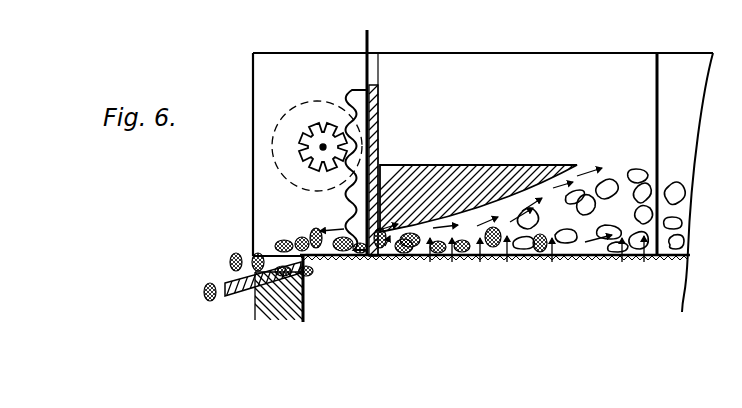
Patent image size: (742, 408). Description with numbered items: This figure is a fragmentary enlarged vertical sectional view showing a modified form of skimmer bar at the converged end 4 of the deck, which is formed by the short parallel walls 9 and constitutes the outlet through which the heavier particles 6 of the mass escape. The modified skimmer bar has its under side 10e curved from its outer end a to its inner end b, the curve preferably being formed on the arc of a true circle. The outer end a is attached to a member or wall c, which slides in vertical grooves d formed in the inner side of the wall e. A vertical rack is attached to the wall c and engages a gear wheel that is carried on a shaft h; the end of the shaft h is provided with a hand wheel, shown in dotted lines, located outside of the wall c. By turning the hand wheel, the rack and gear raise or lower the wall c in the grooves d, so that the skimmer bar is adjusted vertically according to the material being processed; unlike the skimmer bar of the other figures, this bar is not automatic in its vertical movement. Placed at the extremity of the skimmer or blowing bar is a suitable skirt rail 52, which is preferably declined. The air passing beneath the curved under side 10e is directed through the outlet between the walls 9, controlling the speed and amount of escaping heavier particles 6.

The converged end of the deck 4 is at (483, 182).
The heavier particles 6 is at (456, 288).
The skirt rail 52 is at (228, 283).
The wall e is at (380, 64).
The member or wall c is at (378, 114).
The vertical grooves d is at (372, 88).
The short parallel walls 9 is at (323, 140).
The shaft h is at (320, 150).
The outer end of the skimmer bar a is at (356, 210).
The under side of the skimmer bar 10e is at (576, 154).